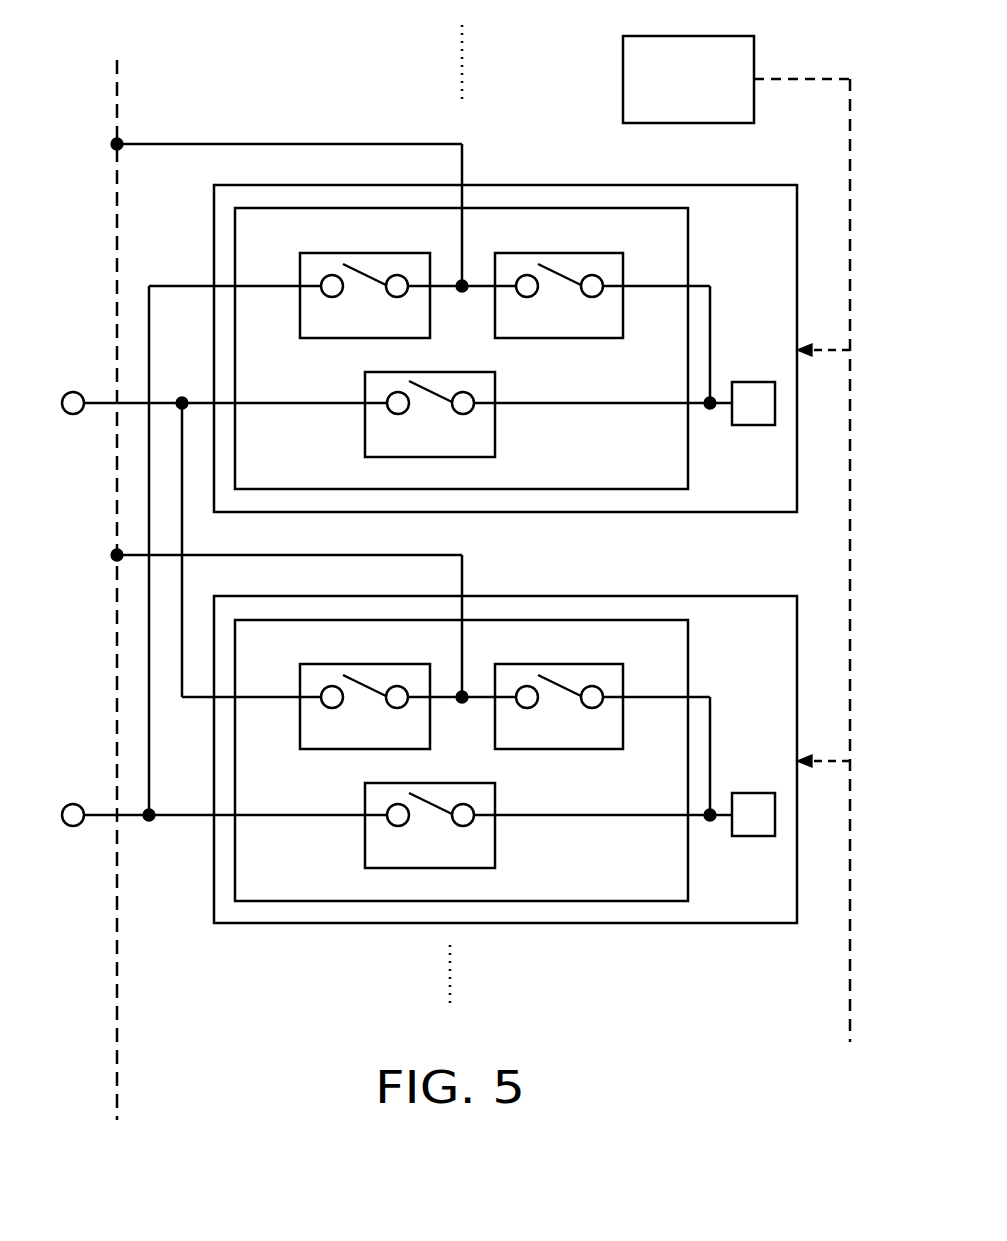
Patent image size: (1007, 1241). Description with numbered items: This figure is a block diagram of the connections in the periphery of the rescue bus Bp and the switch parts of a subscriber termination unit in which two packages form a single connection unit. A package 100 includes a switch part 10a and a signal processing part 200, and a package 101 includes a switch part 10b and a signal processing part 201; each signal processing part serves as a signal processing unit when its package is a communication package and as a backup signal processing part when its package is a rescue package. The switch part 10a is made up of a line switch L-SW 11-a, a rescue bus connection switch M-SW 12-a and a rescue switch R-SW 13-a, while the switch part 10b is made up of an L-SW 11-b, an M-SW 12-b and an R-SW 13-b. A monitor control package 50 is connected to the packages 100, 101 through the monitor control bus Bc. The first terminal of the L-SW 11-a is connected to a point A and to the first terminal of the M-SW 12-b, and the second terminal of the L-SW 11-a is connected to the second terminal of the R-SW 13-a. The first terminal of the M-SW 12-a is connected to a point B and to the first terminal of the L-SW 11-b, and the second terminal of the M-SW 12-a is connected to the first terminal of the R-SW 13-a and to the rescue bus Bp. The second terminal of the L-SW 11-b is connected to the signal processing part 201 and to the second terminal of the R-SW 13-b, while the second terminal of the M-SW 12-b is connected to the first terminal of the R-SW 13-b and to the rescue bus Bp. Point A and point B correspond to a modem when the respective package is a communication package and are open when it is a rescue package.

The monitor control package 50 is at (706, 36).
The rescue bus Bp is at (284, 569).
The monitor control bus Bc is at (786, 79).
The point A is at (224, 544).
The point B is at (224, 580).
The package 100 is at (598, 512).
The package 101 is at (598, 923).
The switch part 10a is at (688, 238).
The switch part 10b is at (688, 649).
The rescue bus connection switch M-SW 12-a is at (300, 277).
The rescue bus connection switch M-SW 12-b is at (300, 688).
The rescue switch R-SW 13-a is at (495, 262).
The rescue switch R-SW 13-b is at (495, 673).
The line switch L-SW 11-a is at (495, 432).
The line switch L-SW 11-b is at (495, 843).
The signal processing part 200 is at (762, 362).
The signal processing part 201 is at (762, 773).